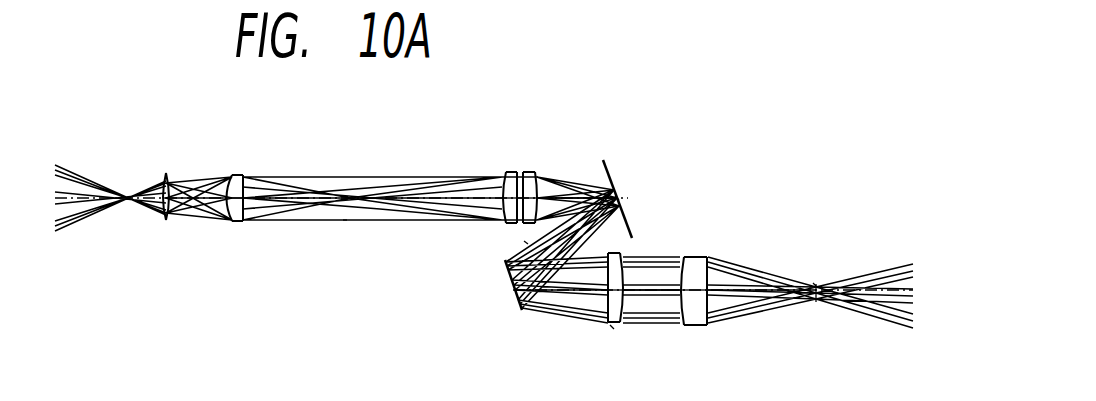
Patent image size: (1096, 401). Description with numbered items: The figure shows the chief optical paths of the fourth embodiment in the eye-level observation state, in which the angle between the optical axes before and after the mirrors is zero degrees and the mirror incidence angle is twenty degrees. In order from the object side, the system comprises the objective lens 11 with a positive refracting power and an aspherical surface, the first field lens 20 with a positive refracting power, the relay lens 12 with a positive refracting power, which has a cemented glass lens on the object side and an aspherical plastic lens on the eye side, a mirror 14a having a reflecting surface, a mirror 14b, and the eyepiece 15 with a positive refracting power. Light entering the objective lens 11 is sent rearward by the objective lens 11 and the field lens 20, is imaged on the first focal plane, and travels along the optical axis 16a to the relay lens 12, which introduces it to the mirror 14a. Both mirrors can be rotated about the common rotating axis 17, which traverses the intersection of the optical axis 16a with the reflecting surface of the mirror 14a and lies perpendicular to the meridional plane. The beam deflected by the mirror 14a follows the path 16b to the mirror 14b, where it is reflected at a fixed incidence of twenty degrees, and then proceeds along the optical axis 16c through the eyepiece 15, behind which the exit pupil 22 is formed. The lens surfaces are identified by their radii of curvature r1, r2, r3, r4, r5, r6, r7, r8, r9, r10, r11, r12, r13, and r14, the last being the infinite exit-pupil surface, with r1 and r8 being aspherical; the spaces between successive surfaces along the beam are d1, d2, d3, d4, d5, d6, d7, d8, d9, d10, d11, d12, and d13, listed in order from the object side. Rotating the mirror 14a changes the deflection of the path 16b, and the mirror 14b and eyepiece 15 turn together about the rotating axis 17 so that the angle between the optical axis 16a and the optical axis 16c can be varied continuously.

The objective lens 11 is at (164, 161).
The first field lens 20 is at (242, 161).
The relay lens 12 is at (487, 173).
The mirror 14a is at (626, 188).
The mirror 14b is at (521, 310).
The eyepiece 15 is at (712, 244).
The rotating axis 17 is at (621, 200).
The exit pupil 22 is at (813, 283).
The optical axis 16a is at (345, 222).
The path 16b is at (526, 243).
The optical axis 16c is at (665, 292).
The radius of curvature r1 is at (163, 180).
The radius of curvature r2 is at (169, 180).
The radius of curvature r3 is at (229, 178).
The radius of curvature r4 is at (243, 178).
The radius of curvature r5 is at (502, 182).
The radius of curvature r6 is at (512, 178).
The radius of curvature r7 is at (522, 178).
The radius of curvature r8 is at (555, 181).
The radius of curvature r9 is at (604, 172).
The radius of curvature r10 is at (610, 254).
The radius of curvature r11 is at (624, 256).
The radius of curvature r12 is at (682, 256).
The radius of curvature r13 is at (708, 260).
The radius of curvature r14 is at (818, 292).
The space between lens surfaces d1 is at (164, 217).
The space between lens surfaces d2 is at (198, 210).
The space between lens surfaces d3 is at (235, 202).
The space between lens surfaces d4 is at (310, 200).
The space between lens surfaces d5 is at (420, 220).
The space between lens surfaces d6 is at (460, 219).
The space between lens surfaces d7 is at (500, 220).
The space between lens surfaces d8 is at (533, 227).
The space between lens surfaces d9 is at (570, 290).
The space between lens surfaces d10 is at (608, 290).
The space between lens surfaces d11 is at (655, 290).
The space between lens surfaces d12 is at (696, 298).
The space between lens surfaces d13 is at (730, 300).